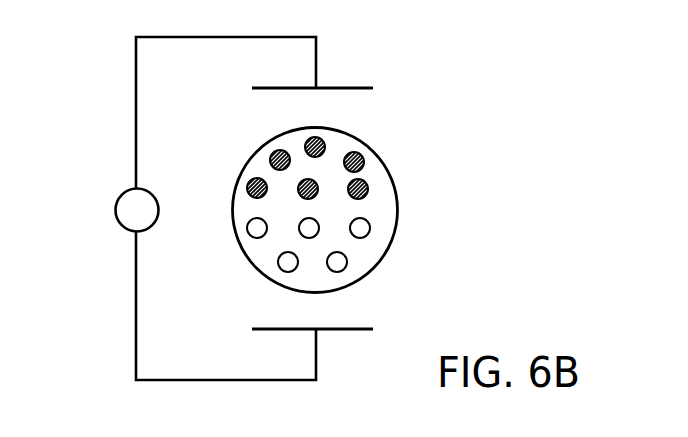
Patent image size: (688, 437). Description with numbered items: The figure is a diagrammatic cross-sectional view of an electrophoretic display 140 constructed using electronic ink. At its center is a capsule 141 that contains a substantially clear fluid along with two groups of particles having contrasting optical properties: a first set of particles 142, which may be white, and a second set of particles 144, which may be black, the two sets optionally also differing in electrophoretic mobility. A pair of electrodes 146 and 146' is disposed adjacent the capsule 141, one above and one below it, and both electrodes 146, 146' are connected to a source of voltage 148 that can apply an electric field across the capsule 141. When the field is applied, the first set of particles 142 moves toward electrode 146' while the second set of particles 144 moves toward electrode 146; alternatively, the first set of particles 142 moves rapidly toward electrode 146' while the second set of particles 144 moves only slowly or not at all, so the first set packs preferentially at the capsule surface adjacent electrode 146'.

The electrophoretic display 140 is at (492, 64).
The capsule 141 is at (397, 208).
The first set of particles 142 is at (369, 231).
The second set of particles 144 is at (356, 153).
The electrode 146 is at (313, 63).
The electrode 146' is at (315, 356).
The source of voltage 148 is at (114, 210).